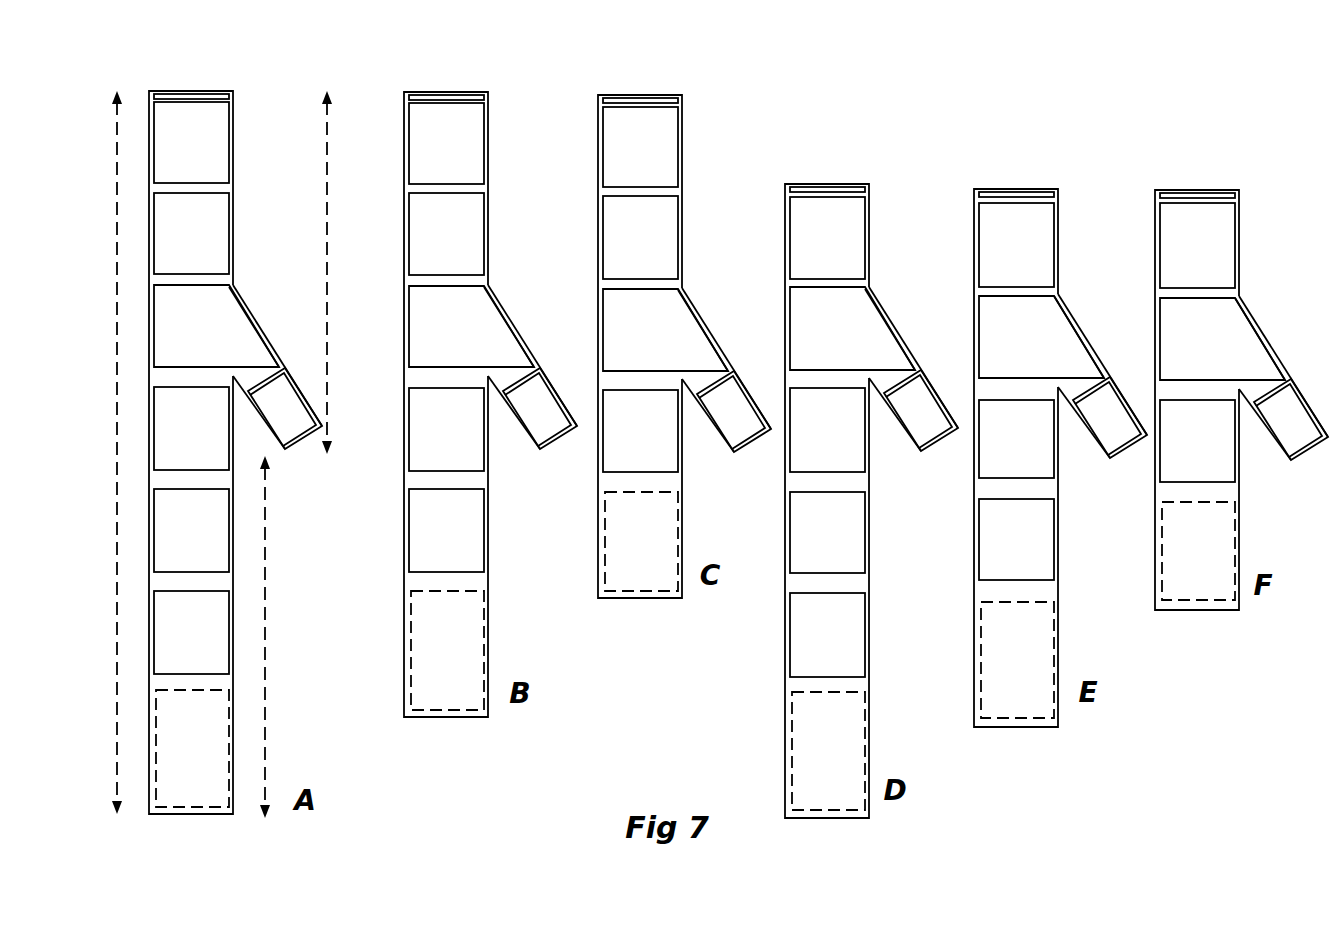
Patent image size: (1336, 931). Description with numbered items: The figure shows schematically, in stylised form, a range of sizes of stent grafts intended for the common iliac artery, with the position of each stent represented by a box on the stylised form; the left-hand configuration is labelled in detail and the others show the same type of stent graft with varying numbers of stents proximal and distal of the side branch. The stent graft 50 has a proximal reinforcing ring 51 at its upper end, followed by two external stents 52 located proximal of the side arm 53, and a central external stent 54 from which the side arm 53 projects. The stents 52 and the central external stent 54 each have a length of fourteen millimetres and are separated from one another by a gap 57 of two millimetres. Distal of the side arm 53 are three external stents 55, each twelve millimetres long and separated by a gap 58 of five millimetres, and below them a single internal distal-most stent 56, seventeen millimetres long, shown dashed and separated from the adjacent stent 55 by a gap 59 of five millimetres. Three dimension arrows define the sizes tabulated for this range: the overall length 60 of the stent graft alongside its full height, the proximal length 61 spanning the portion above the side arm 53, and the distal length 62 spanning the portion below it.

The stent graft 50 is at (203, 65).
The proximal reinforcing ring 51 is at (210, 90).
The external stents 52 is at (200, 135).
The side arm 53 is at (253, 380).
The central external stent 54 is at (207, 325).
The external stents 55 is at (190, 455).
The internal distal-most stent 56 is at (202, 742).
The gap 57 is at (205, 187).
The gap 58 is at (190, 482).
The hinge to end panel 59 is at (202, 682).
The overall length 60 is at (117, 522).
The proximal length 61 is at (327, 265).
The distal length 62 is at (267, 678).